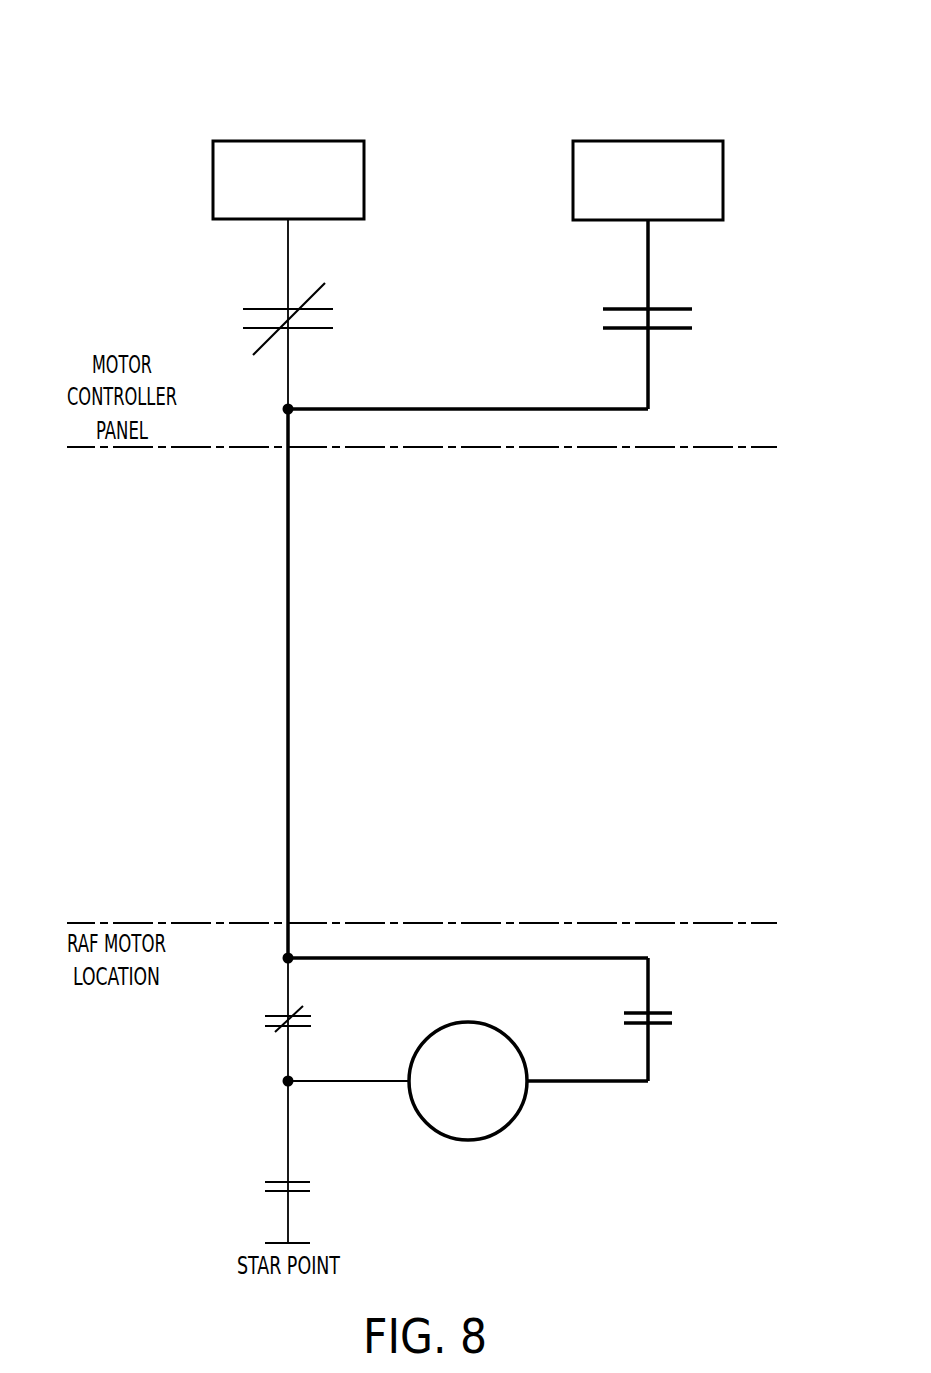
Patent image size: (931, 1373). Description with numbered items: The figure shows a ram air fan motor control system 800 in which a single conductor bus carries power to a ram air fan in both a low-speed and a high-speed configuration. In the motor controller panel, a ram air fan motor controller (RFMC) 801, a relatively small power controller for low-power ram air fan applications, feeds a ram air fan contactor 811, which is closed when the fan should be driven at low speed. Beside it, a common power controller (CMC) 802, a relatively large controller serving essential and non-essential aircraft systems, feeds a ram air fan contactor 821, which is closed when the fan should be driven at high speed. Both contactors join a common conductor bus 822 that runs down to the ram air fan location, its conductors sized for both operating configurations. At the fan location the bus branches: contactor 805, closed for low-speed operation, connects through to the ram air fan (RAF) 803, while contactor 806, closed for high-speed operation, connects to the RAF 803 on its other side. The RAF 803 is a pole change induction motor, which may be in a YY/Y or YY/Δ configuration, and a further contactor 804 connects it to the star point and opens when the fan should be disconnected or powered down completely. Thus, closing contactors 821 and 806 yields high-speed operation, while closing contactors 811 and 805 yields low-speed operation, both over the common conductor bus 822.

The ram air fan motor control system 800 is at (737, 92).
The ram air fan motor controller (RFMC) 801 is at (246, 140).
The common power controller (CMC) 802 is at (610, 140).
The ram air fan (RAF) 803 is at (440, 1135).
The contactor 804 is at (270, 1181).
The contactor 805 is at (273, 1013).
The contactor 806 is at (691, 994).
The ram air fan contactor 811 is at (254, 308).
The ram air fan contactor 821 is at (686, 307).
The conductor bus 822 is at (287, 693).